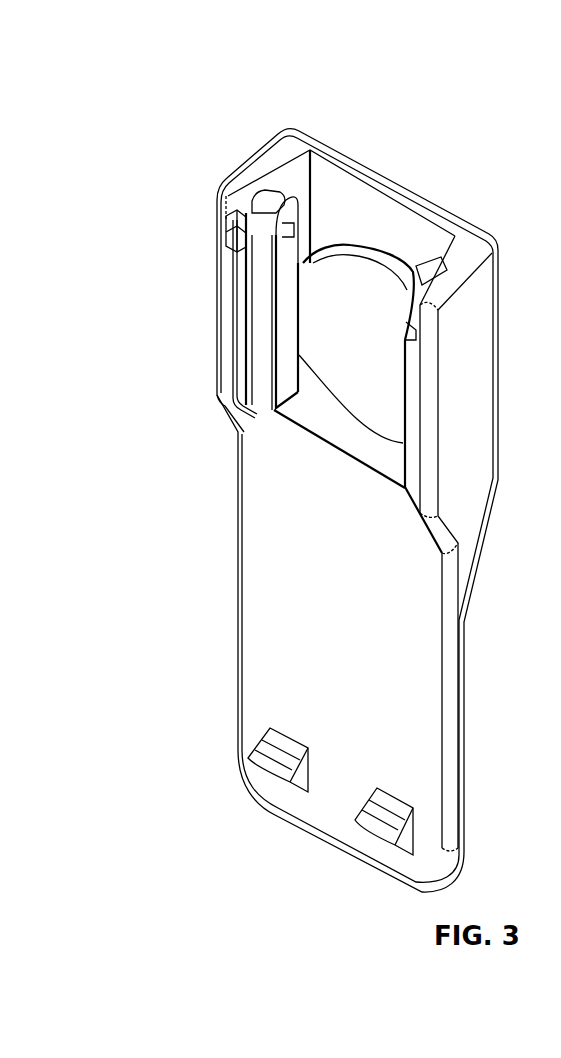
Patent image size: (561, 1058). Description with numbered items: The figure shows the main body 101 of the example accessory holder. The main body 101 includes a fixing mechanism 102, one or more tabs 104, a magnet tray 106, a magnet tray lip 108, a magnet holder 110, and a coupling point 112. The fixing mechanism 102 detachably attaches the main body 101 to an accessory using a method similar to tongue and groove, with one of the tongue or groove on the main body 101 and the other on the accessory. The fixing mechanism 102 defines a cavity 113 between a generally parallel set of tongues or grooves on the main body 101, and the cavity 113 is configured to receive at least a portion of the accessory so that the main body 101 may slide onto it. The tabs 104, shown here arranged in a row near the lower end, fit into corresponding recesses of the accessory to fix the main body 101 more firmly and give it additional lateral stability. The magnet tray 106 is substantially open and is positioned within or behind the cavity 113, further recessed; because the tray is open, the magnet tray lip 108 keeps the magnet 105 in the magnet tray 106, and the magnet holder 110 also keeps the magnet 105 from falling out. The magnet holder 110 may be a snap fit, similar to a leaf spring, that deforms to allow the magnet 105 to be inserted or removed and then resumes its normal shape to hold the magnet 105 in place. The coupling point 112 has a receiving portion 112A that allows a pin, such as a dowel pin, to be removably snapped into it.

The main body 101 is at (217, 66).
The fixing mechanism 102 is at (237, 336).
The tab 104 is at (250, 758).
The magnet 105 is at (380, 391).
The magnet tray 106 is at (354, 203).
The magnet tray lip 108 is at (277, 312).
The magnet holder 110 is at (367, 500).
The coupling point 112 is at (247, 189).
The receiving portion 112A is at (317, 258).
The cavity 113 is at (398, 510).